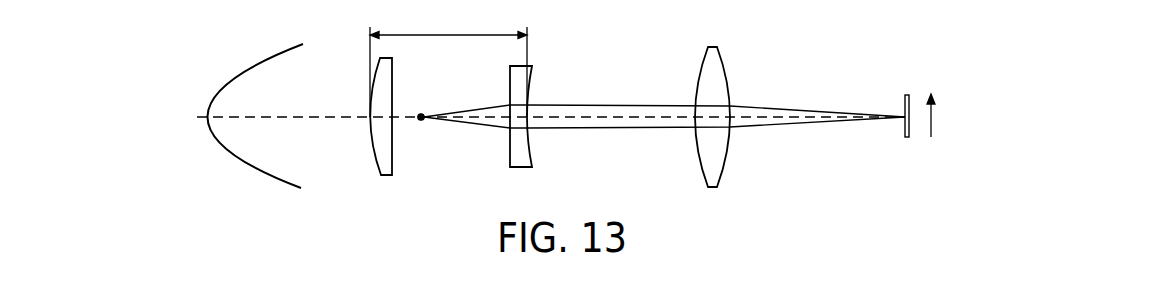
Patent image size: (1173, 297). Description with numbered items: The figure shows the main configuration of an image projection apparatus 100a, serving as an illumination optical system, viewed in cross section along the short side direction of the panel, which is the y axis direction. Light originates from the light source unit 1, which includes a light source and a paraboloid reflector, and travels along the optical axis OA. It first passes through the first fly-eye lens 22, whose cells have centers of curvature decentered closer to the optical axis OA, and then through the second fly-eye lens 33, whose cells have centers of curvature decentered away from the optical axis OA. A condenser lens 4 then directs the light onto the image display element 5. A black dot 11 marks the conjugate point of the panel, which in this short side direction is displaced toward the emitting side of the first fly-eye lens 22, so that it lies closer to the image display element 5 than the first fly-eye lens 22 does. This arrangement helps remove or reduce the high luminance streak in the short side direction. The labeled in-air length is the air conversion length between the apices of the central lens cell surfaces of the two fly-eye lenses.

The light source unit 1 is at (255, 173).
The first fly-eye lens 22 is at (378, 165).
The black dot 11 is at (421, 121).
The second fly-eye lens 33 is at (511, 156).
The condenser lens 4 is at (700, 160).
The image display element 5 is at (900, 130).
The optical axis OA is at (773, 120).
The image projection apparatus 100a is at (897, 30).